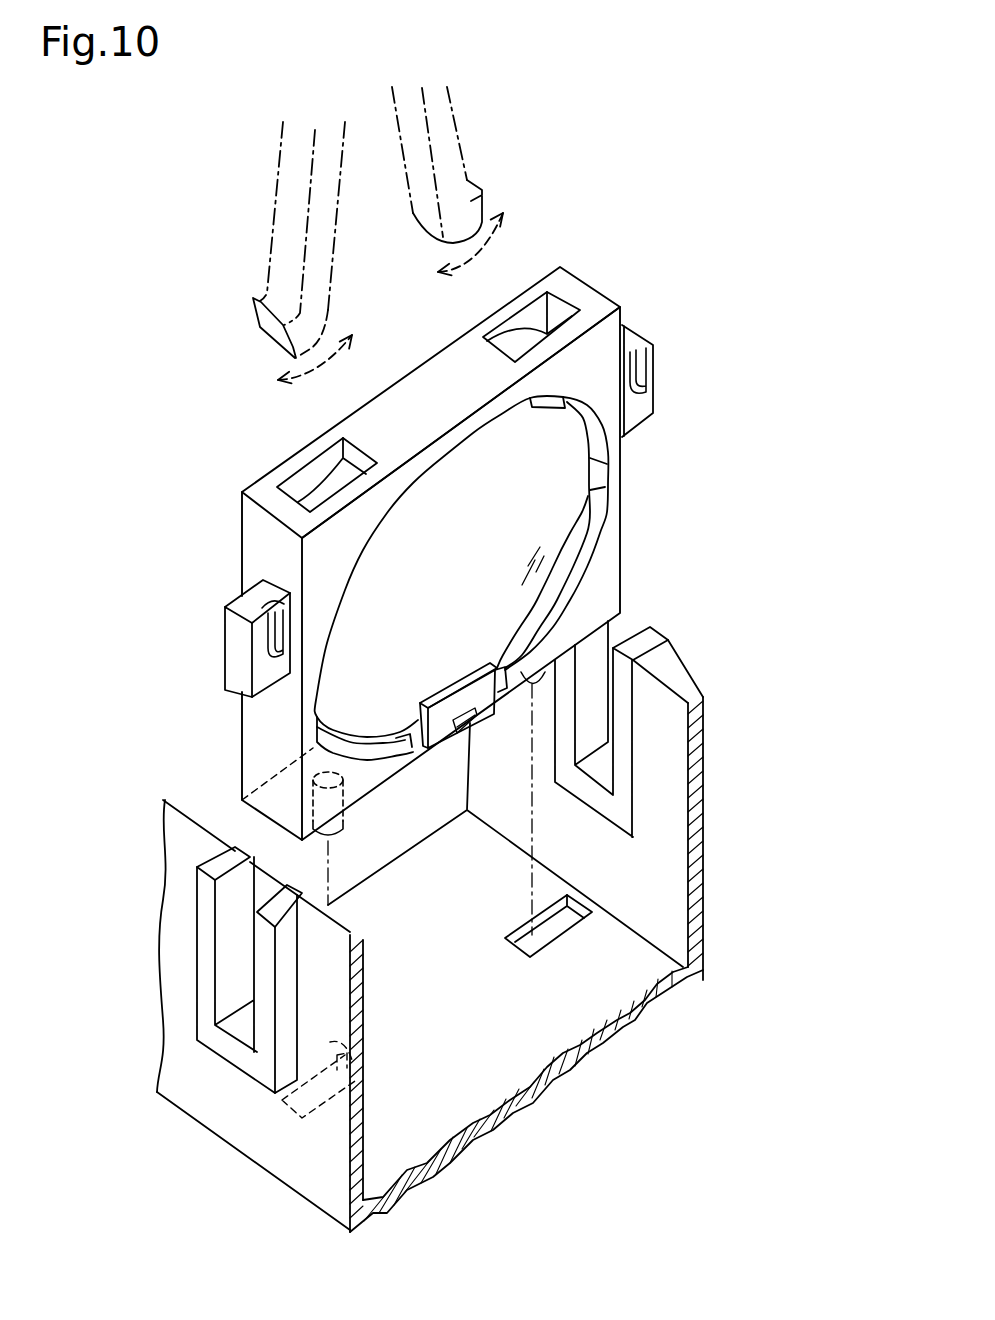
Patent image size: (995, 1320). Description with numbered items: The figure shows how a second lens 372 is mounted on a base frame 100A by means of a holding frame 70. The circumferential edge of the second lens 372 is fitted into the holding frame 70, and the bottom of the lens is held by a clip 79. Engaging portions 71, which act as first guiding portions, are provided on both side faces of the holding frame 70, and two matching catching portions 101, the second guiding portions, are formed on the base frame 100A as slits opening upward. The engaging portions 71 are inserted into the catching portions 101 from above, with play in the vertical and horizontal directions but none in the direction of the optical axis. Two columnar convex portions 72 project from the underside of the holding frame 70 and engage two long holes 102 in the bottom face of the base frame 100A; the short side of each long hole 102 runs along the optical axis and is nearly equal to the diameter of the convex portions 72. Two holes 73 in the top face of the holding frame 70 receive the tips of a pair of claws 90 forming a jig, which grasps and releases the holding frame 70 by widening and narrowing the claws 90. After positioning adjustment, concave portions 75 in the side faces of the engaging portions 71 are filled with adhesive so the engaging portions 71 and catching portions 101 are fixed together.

The holding frame 70 is at (412, 392).
The holes 73 is at (303, 475).
The concave portions 75 is at (257, 605).
The engaging portions 71 is at (235, 662).
The second lens 372 is at (565, 510).
The clip 79 is at (435, 742).
The columnar convex portions 72 is at (531, 684).
The claws 90 is at (275, 227).
The base frame 100A is at (736, 698).
The catching portions 101 is at (630, 640).
The long holes 102 is at (524, 930).